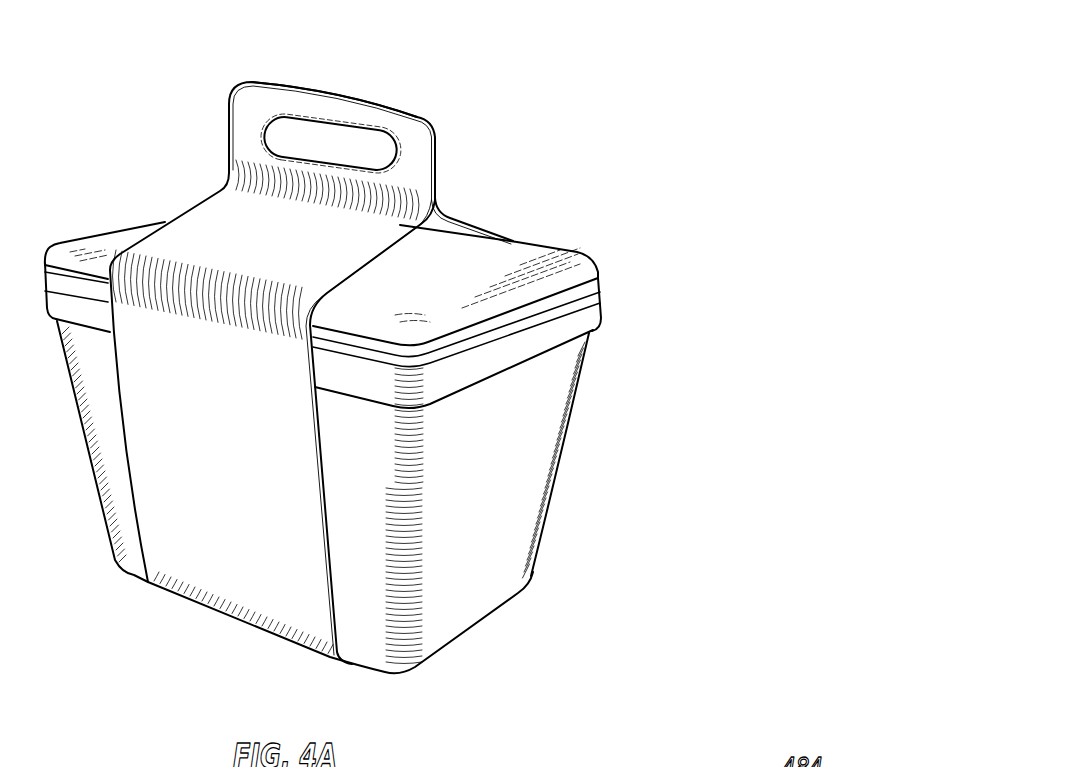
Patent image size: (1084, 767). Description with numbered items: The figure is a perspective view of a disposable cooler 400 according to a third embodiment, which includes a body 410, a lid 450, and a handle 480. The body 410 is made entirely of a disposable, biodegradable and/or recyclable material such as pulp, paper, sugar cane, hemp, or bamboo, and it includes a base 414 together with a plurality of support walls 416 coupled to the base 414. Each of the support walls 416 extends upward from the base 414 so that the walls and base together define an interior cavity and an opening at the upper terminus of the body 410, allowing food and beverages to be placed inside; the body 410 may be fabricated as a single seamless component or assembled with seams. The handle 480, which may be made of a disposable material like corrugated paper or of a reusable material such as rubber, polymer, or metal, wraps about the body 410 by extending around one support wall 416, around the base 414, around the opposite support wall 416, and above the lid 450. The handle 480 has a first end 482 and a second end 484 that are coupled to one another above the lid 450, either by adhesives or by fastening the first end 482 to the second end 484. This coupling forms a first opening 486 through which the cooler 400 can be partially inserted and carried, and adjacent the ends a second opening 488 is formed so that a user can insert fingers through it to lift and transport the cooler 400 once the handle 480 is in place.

The disposable cooler 400 is at (644, 146).
The body 410 is at (596, 455).
The base 414 is at (472, 633).
The support walls 416 is at (503, 535).
The lid 450 is at (606, 245).
The handle 480 is at (474, 140).
The first end 482 is at (242, 97).
The second end 484 is at (357, 97).
The first opening 486 is at (468, 219).
The second opening 488 is at (288, 133).